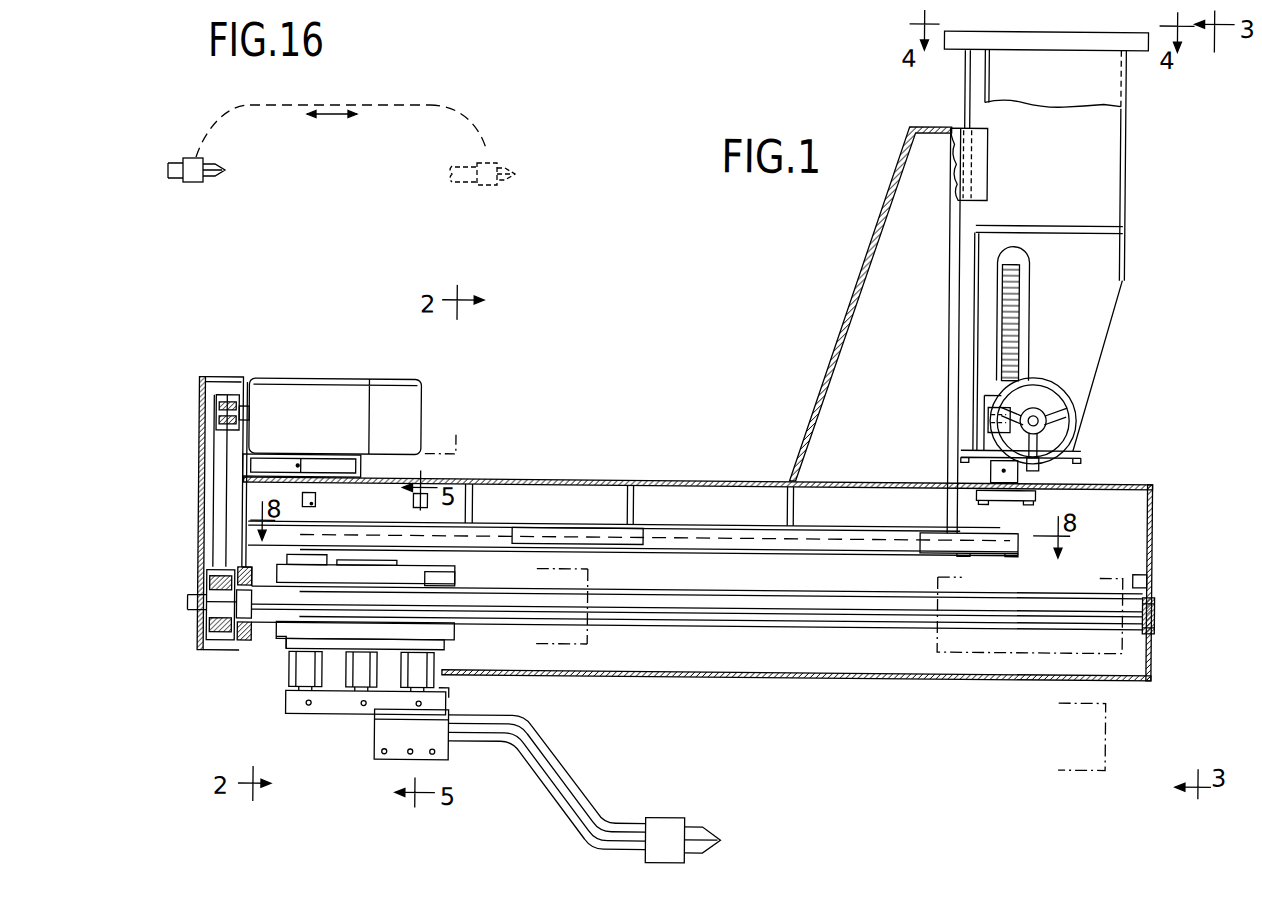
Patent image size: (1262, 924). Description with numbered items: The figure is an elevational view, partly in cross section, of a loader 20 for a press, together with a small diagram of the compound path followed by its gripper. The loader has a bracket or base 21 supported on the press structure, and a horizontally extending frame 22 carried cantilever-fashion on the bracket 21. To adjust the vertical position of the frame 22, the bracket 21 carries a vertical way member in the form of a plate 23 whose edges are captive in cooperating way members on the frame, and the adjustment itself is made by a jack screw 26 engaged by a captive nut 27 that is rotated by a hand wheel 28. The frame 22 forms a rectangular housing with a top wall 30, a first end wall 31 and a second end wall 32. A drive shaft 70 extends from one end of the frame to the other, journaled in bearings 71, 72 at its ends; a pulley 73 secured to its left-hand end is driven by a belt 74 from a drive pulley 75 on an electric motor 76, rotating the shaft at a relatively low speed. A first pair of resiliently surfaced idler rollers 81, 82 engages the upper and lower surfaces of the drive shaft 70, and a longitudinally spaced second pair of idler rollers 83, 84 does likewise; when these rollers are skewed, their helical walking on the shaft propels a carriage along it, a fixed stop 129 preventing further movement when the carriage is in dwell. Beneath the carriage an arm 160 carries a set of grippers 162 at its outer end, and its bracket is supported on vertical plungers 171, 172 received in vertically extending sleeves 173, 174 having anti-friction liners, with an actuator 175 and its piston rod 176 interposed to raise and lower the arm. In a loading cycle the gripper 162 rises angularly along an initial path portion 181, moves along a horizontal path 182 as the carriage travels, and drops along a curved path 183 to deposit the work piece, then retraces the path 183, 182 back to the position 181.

In FIG. 1, the loader 20 is at (618, 312).
In FIG. 1, the bracket or base 21 is at (1113, 273).
In FIG. 1, the frame 22 is at (810, 405).
In FIG. 1, the plate 23 is at (967, 214).
In FIG. 1, the jack screw 26 is at (1013, 332).
In FIG. 1, the captive nut 27 is at (990, 413).
In FIG. 1, the hand wheel 28 is at (1060, 416).
In FIG. 1, the top wall 30 is at (613, 480).
In FIG. 1, the first end wall 31 is at (243, 540).
In FIG. 1, the second end wall 32 is at (1153, 526).
In FIG. 1, the drive shaft 70 is at (718, 591).
In FIG. 1, the bearing 71 is at (247, 648).
In FIG. 1, the bearing 72 is at (1156, 640).
In FIG. 1, the pulley 73 is at (213, 640).
In FIG. 1, the belt 74 is at (212, 486).
In FIG. 1, the drive pulley 75 is at (215, 401).
In FIG. 1, the electric motor 76 is at (293, 381).
In FIG. 1, the idler roller 81 is at (457, 578).
In FIG. 1, the idler roller 82 is at (452, 638).
In FIG. 1, the idler roller 83 is at (287, 582).
In FIG. 1, the idler roller 84 is at (280, 642).
In FIG. 1, the fixed stop 129 is at (1149, 582).
In FIG. 1, the arm 160 is at (568, 787).
In FIG. 16, the grippers 162 is at (193, 183).
In FIG. 1, the grippers 162 is at (665, 818).
In FIG. 1, the vertical plunger 171 is at (305, 695).
In FIG. 1, the vertical plunger 172 is at (450, 692).
In FIG. 1, the sleeve 173 is at (290, 674).
In FIG. 1, the sleeve 174 is at (440, 680).
In FIG. 1, the actuator 175 is at (346, 678).
In FIG. 1, the piston rod 176 is at (362, 693).
In FIG. 16, the initial portion of the path 181 is at (215, 125).
In FIG. 16, the horizontal path of movement 182 is at (330, 105).
In FIG. 16, the curved path 183 is at (478, 133).